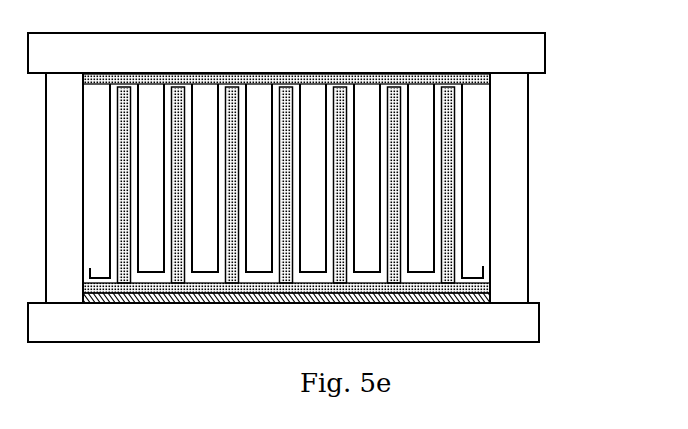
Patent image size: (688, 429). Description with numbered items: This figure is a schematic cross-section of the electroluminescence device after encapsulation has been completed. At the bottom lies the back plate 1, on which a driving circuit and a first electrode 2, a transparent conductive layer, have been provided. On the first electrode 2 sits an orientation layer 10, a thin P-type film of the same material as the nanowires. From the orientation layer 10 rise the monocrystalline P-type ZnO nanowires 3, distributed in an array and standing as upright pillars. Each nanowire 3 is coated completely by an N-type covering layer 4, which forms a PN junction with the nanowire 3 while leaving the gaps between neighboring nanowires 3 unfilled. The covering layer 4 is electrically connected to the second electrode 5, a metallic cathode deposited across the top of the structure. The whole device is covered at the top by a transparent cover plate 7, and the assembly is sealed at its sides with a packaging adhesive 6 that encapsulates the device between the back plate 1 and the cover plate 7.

The back plate 1 is at (515, 328).
The first electrode 2 is at (478, 300).
The nanowire 3 is at (453, 231).
The covering layer 4 is at (460, 172).
The second electrode 5 is at (492, 80).
The packaging adhesive 6 is at (522, 135).
The cover plate 7 is at (530, 58).
The orientation layer 10 is at (480, 288).